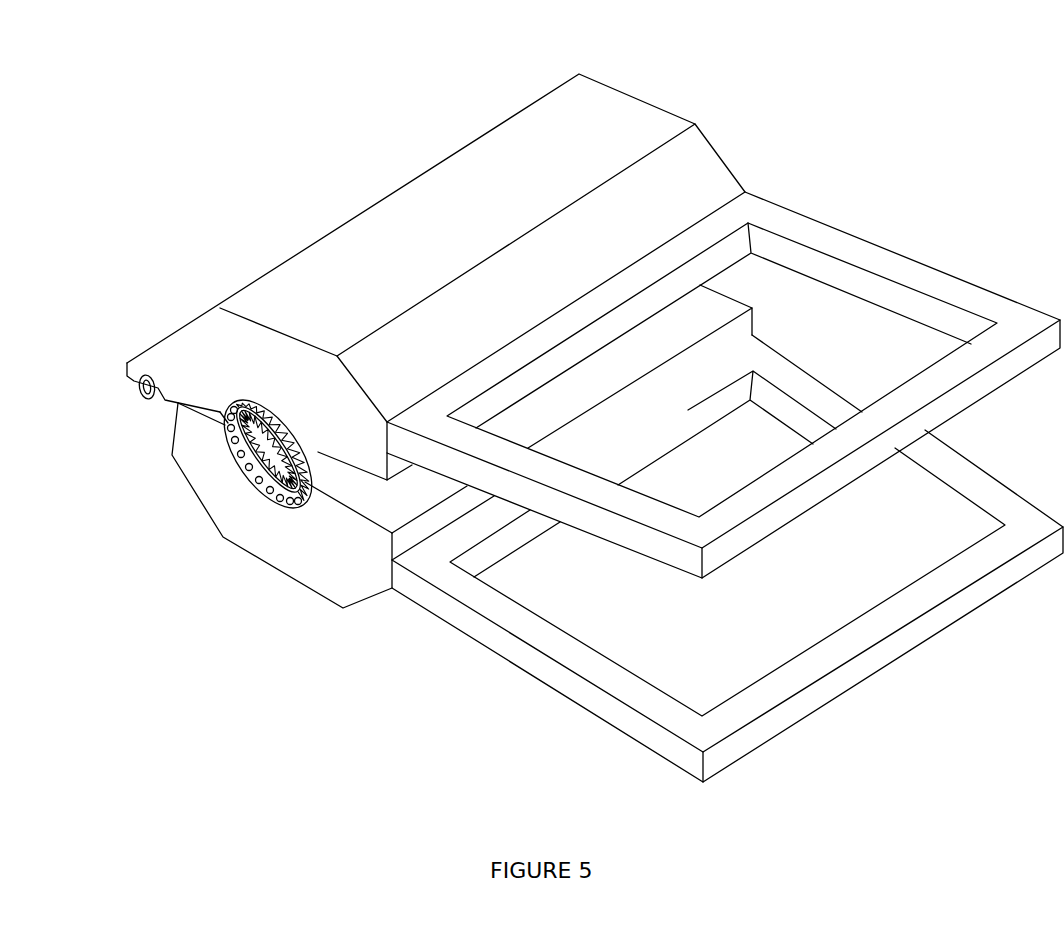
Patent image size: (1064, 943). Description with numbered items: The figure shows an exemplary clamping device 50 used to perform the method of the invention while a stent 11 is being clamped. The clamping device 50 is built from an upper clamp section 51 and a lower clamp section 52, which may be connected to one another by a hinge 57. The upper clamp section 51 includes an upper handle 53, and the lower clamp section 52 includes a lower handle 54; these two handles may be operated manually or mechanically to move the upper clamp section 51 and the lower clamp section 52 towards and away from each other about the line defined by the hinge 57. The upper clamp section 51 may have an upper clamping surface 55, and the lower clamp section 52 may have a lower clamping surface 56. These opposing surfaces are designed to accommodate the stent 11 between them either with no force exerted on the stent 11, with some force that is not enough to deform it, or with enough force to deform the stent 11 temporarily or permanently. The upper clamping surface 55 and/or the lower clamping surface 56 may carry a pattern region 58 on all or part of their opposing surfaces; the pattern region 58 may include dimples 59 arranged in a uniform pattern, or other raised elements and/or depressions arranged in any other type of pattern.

The clamping device 50 is at (852, 146).
The upper clamp section 51 is at (614, 115).
The lower clamp section 52 is at (332, 548).
The upper handle 53 is at (985, 300).
The lower handle 54 is at (570, 685).
The upper clamping surface 55 is at (217, 405).
The lower clamping surface 56 is at (267, 502).
The hinge 57 is at (140, 384).
The pattern region 58 is at (232, 470).
The dimples 59 is at (228, 456).
The stent 11 is at (290, 418).